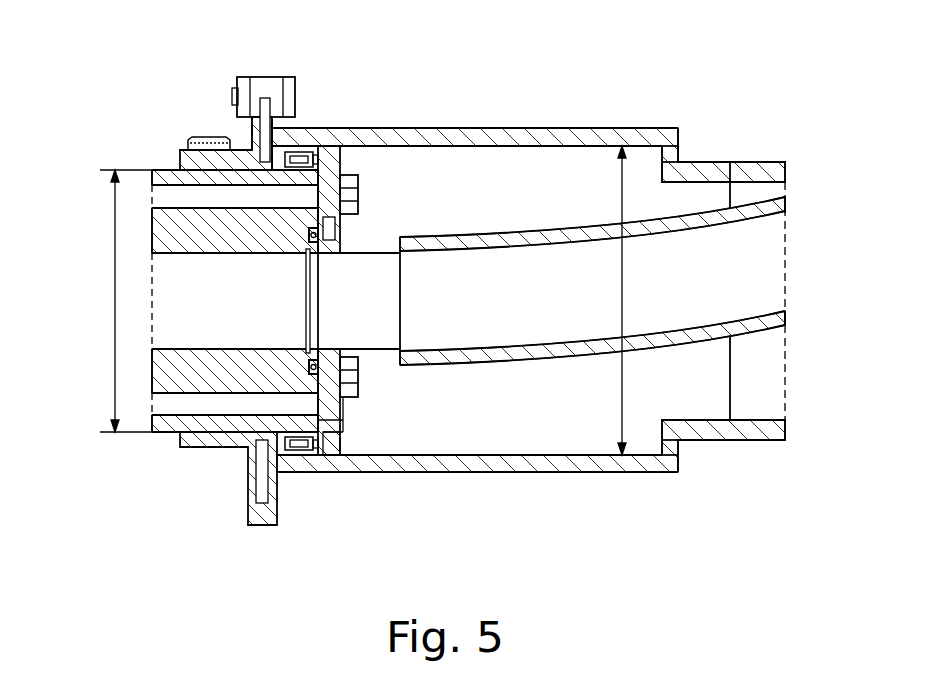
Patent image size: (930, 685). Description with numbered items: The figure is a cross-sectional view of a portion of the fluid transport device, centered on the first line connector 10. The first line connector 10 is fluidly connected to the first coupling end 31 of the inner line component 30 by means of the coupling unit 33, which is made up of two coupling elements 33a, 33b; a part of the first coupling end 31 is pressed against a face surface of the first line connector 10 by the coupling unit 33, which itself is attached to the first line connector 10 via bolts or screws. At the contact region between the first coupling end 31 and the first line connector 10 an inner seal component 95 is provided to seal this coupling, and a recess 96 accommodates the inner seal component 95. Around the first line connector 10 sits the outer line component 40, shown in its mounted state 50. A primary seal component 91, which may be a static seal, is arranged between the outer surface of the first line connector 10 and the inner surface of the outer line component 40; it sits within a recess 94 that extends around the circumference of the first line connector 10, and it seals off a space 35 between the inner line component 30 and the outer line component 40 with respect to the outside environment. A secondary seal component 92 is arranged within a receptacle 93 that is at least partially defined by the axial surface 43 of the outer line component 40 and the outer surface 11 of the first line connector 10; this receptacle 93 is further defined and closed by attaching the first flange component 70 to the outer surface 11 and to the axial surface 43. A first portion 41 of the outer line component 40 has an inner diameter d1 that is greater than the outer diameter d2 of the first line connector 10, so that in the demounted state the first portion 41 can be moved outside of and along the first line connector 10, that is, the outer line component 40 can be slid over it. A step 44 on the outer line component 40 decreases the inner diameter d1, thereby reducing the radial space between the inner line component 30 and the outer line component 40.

The first line connector 10 is at (185, 229).
The outer surface 11 is at (226, 157).
The inner line component 30 is at (581, 318).
The first coupling end 31 is at (383, 373).
The coupling unit 33 is at (330, 214).
The coupling element 33a is at (512, 137).
The coupling element 33b is at (328, 398).
The space 35 is at (562, 256).
The outer line component 40 is at (538, 318).
The first portion 41 is at (620, 497).
The axial surface 43 is at (257, 128).
The step 44 is at (722, 154).
The mounted state 50 is at (710, 118).
The first flange component 70 is at (217, 120).
The primary seal component 91 is at (298, 157).
The secondary seal component 92 is at (217, 86).
The receptacle 93 is at (266, 94).
The recess 94 is at (352, 157).
The inner seal component 95 is at (335, 428).
The recess 96 is at (291, 372).
The inner diameter d1 is at (680, 445).
The outer diameter d2 is at (115, 300).